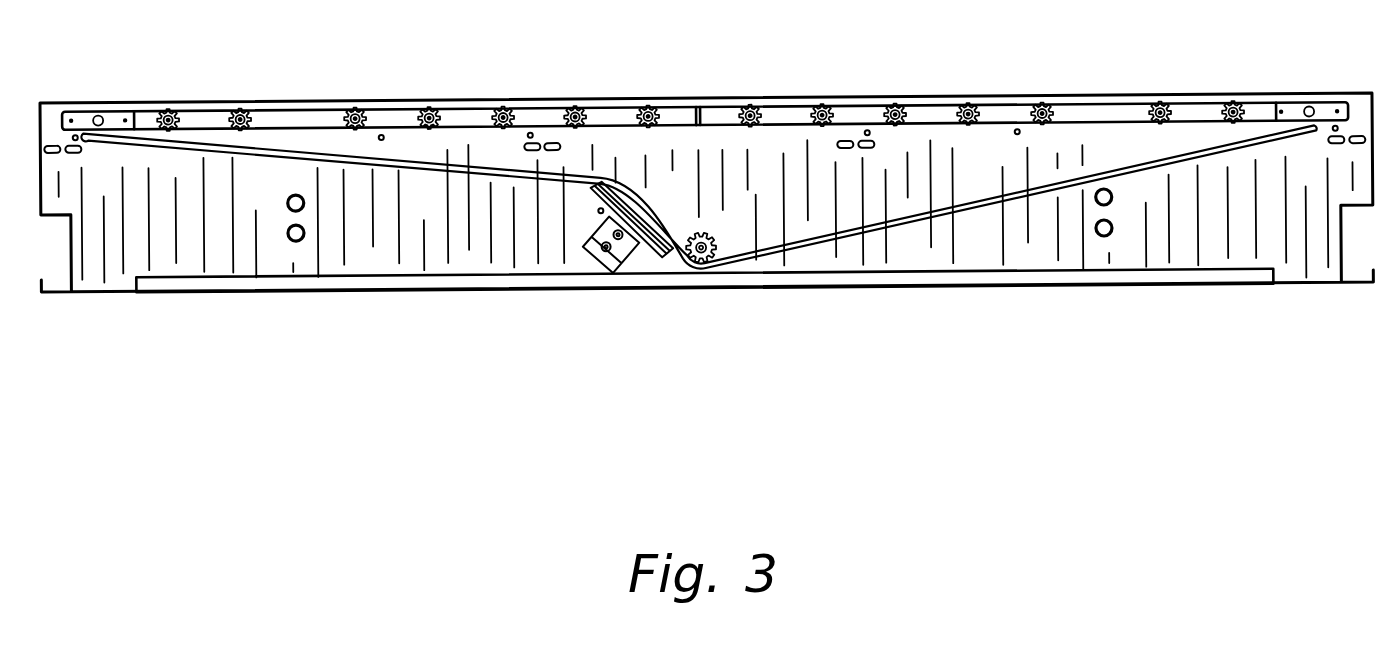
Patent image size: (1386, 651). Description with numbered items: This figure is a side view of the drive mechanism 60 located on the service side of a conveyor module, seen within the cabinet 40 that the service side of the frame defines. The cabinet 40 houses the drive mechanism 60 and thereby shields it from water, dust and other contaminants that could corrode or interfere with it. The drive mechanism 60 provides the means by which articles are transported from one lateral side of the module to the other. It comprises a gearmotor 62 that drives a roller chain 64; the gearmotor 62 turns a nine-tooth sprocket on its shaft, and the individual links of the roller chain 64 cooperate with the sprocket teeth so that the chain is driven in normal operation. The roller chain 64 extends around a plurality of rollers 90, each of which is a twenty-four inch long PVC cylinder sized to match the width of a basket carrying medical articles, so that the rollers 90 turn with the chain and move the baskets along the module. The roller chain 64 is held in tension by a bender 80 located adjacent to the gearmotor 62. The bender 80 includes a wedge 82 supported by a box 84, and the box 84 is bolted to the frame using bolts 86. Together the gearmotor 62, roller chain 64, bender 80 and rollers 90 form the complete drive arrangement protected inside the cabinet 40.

The cabinet 40 is at (378, 250).
The drive mechanism 60 is at (444, 374).
The gearmotor 62 is at (718, 228).
The roller chain 64 is at (975, 206).
The bender 80 is at (622, 327).
The wedge 82 is at (650, 256).
The box 84 is at (593, 224).
The bolts 86 is at (598, 270).
The rollers 90 is at (631, 102).